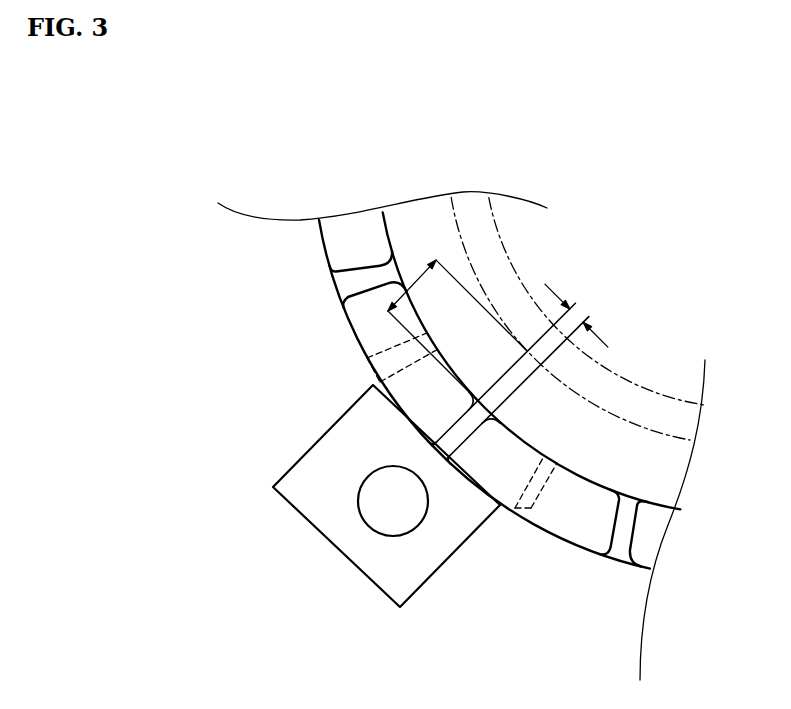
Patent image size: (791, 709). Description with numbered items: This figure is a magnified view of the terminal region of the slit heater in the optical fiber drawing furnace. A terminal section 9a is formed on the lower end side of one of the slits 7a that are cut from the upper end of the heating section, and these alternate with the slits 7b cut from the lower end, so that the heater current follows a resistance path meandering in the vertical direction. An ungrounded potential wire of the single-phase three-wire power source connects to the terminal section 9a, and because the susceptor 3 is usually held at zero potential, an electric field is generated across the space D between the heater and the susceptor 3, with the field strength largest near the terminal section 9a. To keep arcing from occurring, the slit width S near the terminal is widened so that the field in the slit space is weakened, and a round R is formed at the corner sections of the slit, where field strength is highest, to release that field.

The susceptor 3 is at (487, 241).
The slits cut from the upper end 7a is at (357, 283).
The slits cut from the lower end 7b is at (367, 358).
The terminal section 9a is at (370, 548).
The space between the slit heater and the susceptor D is at (457, 330).
The slit width S is at (576, 315).
The round R is at (621, 489).